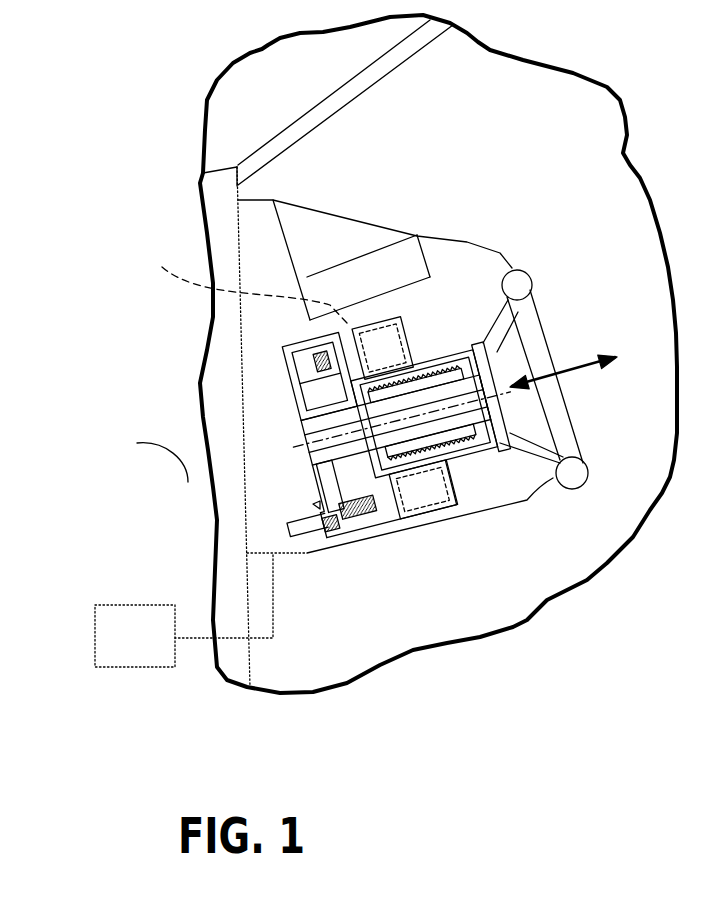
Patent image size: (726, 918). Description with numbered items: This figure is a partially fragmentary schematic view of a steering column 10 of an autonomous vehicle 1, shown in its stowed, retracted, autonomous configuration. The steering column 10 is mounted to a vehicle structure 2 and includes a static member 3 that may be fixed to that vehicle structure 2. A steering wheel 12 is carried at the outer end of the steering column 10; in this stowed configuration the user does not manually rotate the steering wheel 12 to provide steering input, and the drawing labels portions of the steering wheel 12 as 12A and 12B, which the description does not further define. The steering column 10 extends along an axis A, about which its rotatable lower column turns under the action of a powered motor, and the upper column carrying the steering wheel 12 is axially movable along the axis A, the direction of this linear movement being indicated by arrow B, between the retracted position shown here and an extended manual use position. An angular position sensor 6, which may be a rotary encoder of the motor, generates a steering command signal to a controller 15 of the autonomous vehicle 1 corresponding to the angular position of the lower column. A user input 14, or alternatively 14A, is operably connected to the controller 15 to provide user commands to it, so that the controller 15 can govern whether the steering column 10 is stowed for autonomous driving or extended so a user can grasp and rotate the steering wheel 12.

The autonomous vehicle 1 is at (427, 582).
The vehicle structure 2 is at (312, 562).
The static member 3 is at (313, 504).
The angular position sensor 6 is at (245, 284).
The steering column 10 is at (451, 357).
The steering wheel 12 is at (557, 359).
The spoke 12A is at (500, 285).
The rim 12B is at (577, 423).
The user input 14 is at (396, 420).
The user input 14A is at (401, 419).
The controller 15 is at (142, 667).
The axis of the steering column A is at (148, 456).
The arrow indicating linear movement B is at (570, 375).